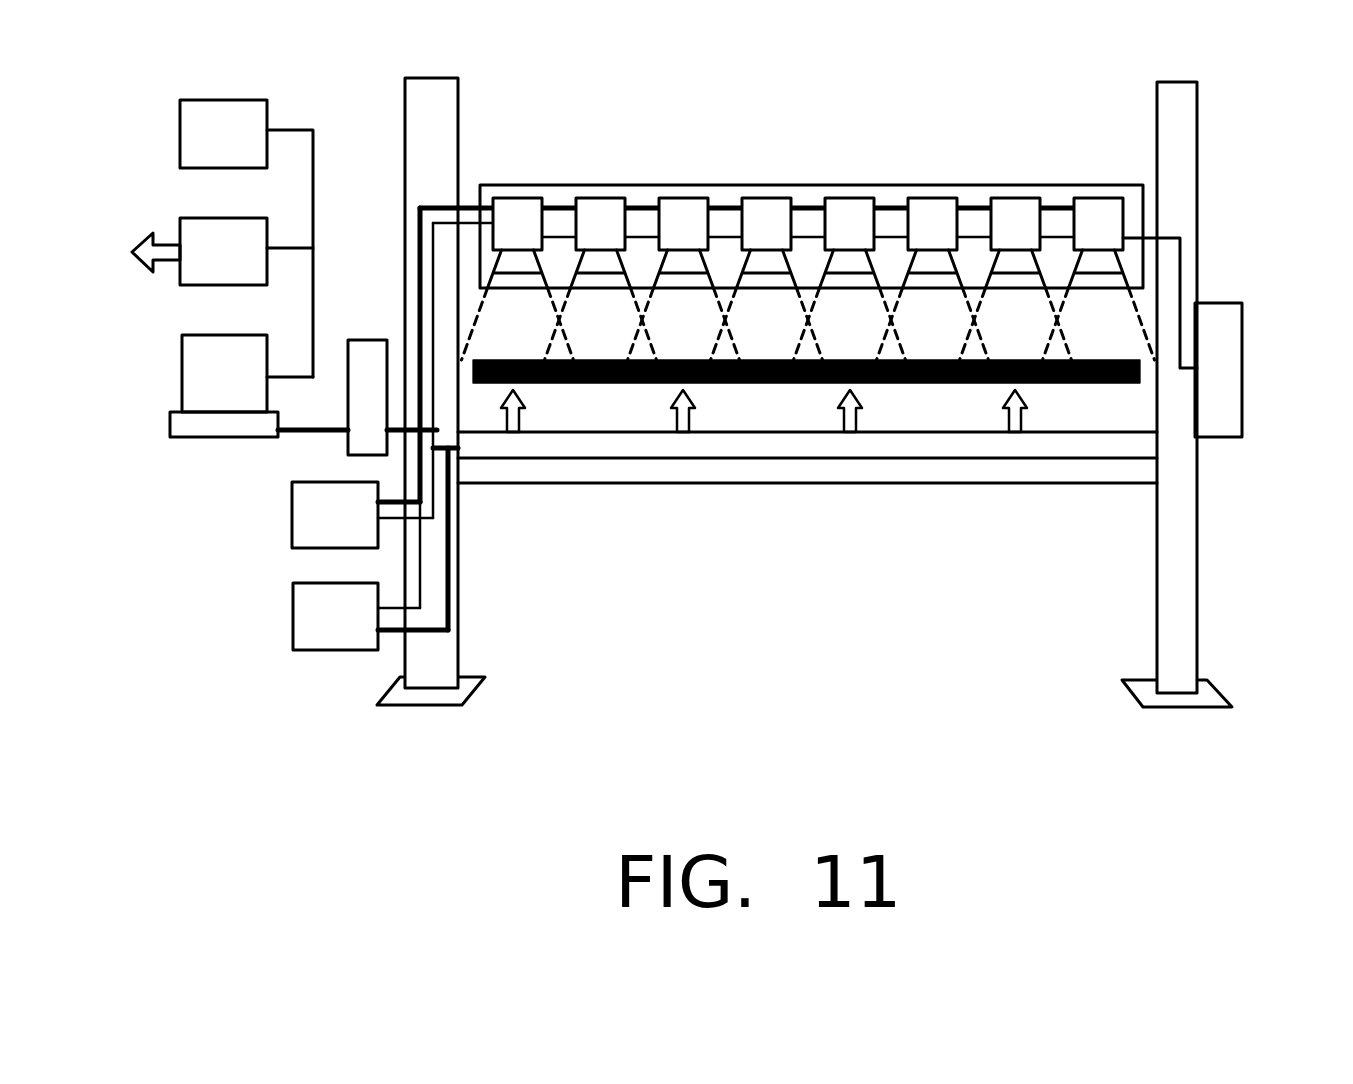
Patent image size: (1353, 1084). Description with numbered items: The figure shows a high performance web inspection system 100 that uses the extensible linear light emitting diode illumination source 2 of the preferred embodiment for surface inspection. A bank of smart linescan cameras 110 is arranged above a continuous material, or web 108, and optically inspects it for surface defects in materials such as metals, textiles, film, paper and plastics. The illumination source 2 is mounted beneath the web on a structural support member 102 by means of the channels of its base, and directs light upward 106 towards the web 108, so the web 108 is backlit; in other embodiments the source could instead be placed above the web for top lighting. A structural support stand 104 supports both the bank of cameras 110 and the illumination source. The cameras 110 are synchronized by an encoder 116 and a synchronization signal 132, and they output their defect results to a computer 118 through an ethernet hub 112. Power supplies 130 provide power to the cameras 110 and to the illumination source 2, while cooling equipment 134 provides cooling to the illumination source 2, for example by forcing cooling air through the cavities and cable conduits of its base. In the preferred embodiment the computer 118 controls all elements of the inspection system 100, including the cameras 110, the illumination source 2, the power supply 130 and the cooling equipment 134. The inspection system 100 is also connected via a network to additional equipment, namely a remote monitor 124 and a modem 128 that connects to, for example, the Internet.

The extensible linear light emitting diode illumination source 2 is at (603, 450).
The web inspection system 100 is at (770, 638).
The structural support member 102 is at (832, 483).
The structural support stand 104 is at (1198, 578).
The light directed upward 106 is at (695, 405).
The web 108 is at (887, 383).
The smart linescan cameras 110 is at (603, 197).
The ethernet hub 112 is at (377, 338).
The encoder 116 is at (1242, 335).
The computer 118 is at (170, 420).
The remote monitor 124 is at (180, 107).
The modem 128 is at (180, 277).
The power supplies 130 is at (292, 500).
The synchronization signal 132 is at (1183, 252).
The cooling equipment 134 is at (293, 613).